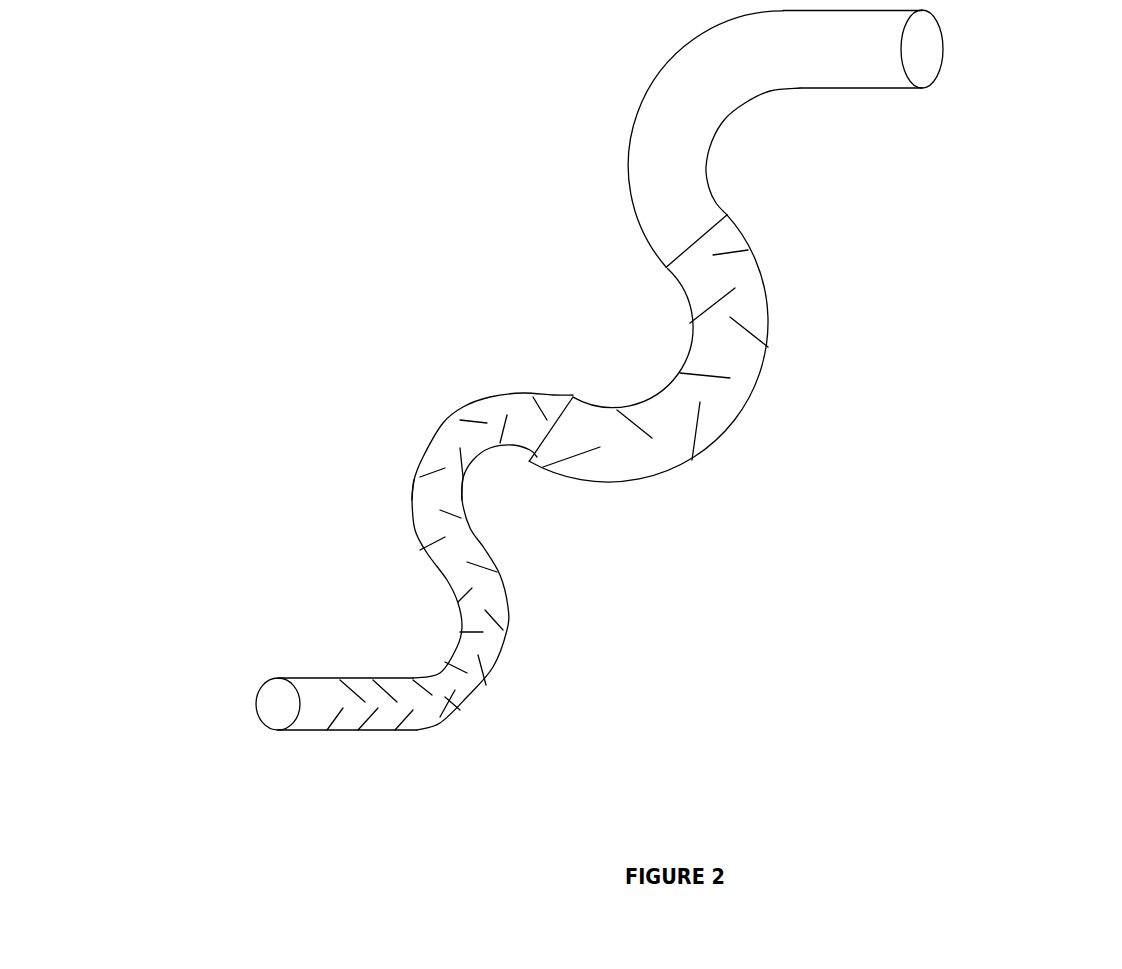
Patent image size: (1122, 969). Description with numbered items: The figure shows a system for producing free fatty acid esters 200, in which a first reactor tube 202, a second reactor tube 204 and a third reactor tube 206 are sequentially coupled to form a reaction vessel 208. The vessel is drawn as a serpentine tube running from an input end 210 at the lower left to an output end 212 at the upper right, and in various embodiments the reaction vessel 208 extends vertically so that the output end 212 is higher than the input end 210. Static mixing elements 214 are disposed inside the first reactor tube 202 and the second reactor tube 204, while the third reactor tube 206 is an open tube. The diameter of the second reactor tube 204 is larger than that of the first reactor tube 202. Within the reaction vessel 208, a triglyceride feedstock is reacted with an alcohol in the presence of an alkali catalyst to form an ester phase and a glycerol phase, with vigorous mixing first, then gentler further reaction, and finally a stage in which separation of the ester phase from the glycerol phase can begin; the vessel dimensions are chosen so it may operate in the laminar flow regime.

The system for producing free fatty acid esters 200 is at (623, 403).
The first reactor tube 202 is at (413, 537).
The second reactor tube 204 is at (748, 407).
The third reactor tube 206 is at (637, 113).
The reaction vessel 208 is at (445, 428).
The input end 210 is at (270, 703).
The output end 212 is at (923, 50).
The static mixing elements 214 is at (768, 313).